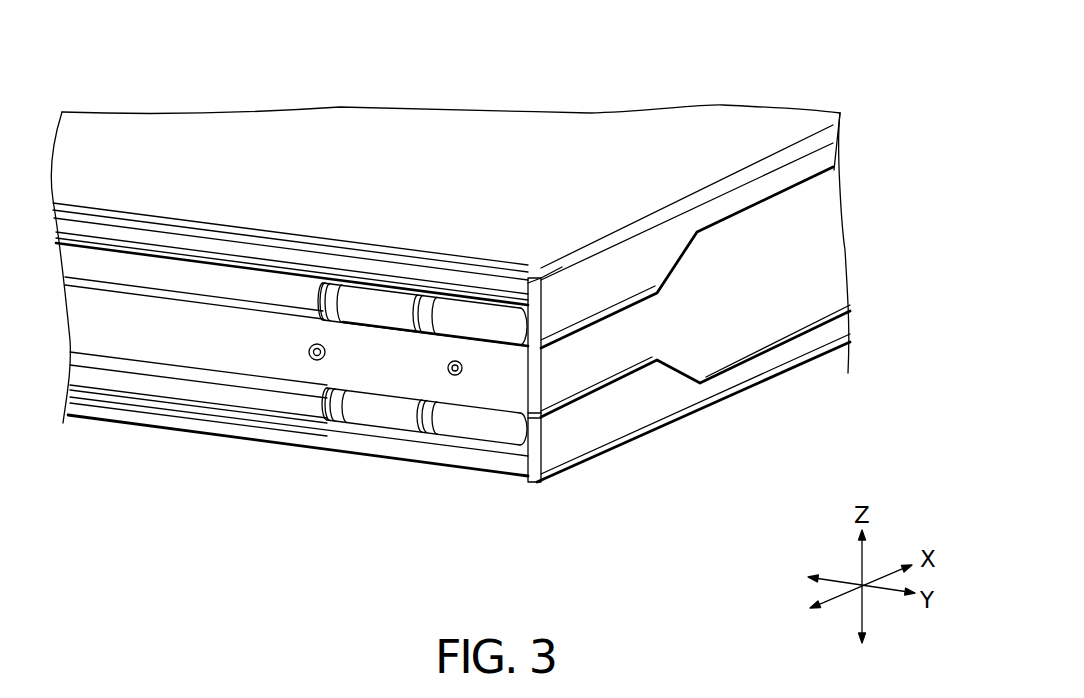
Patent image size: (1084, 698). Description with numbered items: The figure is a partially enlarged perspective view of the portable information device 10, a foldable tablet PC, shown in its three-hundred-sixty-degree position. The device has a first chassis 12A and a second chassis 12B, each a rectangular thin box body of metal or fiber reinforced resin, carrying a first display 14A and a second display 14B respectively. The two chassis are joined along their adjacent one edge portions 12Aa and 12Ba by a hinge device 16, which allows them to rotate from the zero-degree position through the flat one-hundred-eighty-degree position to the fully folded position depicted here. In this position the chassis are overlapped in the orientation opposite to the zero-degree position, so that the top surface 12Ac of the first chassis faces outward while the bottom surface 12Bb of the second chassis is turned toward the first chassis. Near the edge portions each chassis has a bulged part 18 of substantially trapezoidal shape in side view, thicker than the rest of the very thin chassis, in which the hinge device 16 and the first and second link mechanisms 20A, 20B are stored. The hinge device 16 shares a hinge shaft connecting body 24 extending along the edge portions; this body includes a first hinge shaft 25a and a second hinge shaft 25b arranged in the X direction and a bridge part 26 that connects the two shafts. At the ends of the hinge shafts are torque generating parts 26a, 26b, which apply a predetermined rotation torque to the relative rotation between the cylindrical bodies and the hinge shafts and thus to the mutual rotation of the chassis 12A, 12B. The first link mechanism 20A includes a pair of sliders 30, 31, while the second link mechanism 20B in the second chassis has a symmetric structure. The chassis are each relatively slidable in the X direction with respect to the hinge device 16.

The portable information device 10 is at (90, 41).
The first chassis 12A is at (786, 201).
The one edge portion 12Aa is at (543, 265).
The top surface 12Ac is at (747, 170).
The second chassis 12B is at (803, 375).
The one edge portion 12Ba is at (543, 457).
The bottom surface 12Bb is at (812, 293).
The first display 14A is at (215, 132).
The second display 14B is at (610, 452).
The hinge device 16 is at (197, 351).
The bulged part 18 is at (627, 287).
The first link mechanism 20A is at (514, 461).
The second link mechanism 20B is at (510, 290).
The hinge shaft connecting body 24 is at (253, 351).
The first hinge shaft 25a is at (420, 298).
The second hinge shaft 25b is at (425, 420).
The bridge part 26 is at (120, 345).
The torque generating part 26a is at (455, 298).
The torque generating part 26b is at (460, 435).
The slider 30 is at (370, 300).
The slider 31 is at (378, 420).